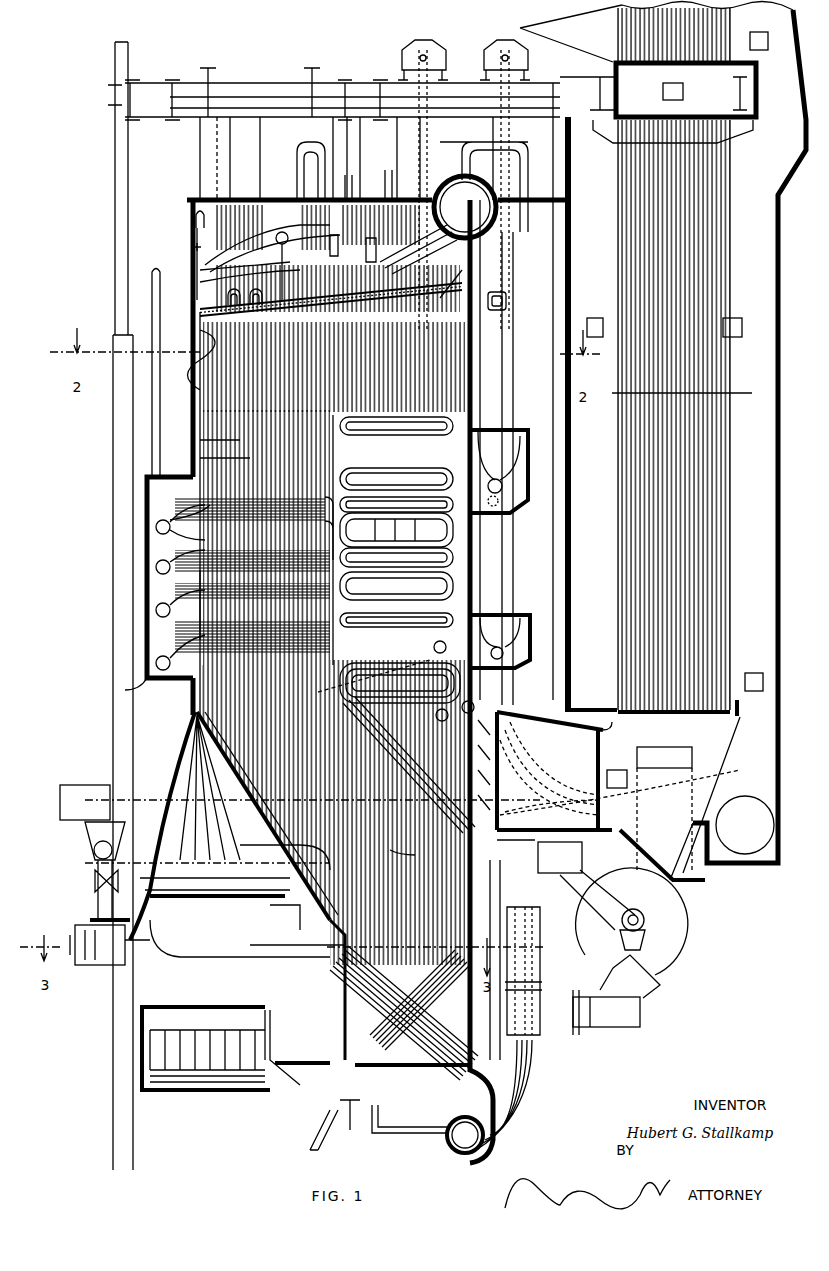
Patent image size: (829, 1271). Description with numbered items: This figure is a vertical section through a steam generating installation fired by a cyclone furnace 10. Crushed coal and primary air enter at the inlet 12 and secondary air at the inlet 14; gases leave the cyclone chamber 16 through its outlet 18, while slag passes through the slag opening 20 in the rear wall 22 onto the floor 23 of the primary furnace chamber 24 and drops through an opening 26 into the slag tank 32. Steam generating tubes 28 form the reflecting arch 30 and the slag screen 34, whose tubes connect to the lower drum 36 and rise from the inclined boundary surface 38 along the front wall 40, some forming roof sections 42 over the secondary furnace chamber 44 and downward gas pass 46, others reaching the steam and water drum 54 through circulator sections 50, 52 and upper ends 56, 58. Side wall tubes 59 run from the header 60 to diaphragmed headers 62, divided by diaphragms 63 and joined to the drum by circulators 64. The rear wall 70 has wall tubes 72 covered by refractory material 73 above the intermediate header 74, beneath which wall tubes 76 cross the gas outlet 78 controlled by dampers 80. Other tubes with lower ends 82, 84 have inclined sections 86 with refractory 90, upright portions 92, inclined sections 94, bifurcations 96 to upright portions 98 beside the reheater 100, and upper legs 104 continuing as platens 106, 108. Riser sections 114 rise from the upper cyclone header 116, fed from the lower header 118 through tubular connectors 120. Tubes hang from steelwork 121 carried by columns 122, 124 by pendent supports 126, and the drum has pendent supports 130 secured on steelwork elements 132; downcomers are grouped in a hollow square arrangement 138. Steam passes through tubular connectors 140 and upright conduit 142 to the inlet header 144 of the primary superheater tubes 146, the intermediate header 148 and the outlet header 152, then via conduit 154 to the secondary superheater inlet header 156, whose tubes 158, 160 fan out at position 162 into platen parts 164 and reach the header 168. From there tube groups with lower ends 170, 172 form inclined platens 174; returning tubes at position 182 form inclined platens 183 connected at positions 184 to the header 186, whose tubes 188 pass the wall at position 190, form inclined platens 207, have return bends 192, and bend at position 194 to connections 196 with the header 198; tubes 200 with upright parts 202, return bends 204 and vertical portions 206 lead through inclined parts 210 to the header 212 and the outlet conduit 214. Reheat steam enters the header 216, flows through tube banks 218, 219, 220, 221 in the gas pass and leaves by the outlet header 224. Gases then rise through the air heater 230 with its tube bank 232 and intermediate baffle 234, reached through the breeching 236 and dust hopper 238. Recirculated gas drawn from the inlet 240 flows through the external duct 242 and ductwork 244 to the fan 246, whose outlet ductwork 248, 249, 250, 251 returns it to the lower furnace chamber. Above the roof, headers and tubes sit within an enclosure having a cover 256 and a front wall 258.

The cyclone furnace 10 is at (97, 910).
The inlet 12 is at (95, 968).
The inlet 14 is at (190, 915).
The cyclone furnace chamber 16 is at (198, 966).
The outlet 18 is at (258, 966).
The slag opening 20 is at (262, 1000).
The rear wall 22 is at (289, 917).
The floor 23 is at (310, 1062).
The primary furnace chamber 24 is at (300, 991).
The opening 26 is at (320, 1110).
The steam generating tubes 28 is at (305, 895).
The reflecting arch 30 is at (297, 946).
The slag pit or tank 32 is at (300, 1145).
The slag screen 34 is at (355, 1015).
The lower drum 36 is at (465, 1155).
The inclined boundary surface 38 is at (225, 765).
The front wall 40 is at (193, 380).
The roof sections 42 is at (283, 313).
The secondary furnace chamber 44 is at (280, 682).
The downward gas pass 46 is at (334, 308).
The circulator section 50 is at (392, 196).
The circulator section 52 is at (344, 245).
The steam and water separating drum 54 is at (465, 207).
The upper end 56 is at (444, 294).
The upper end 58 is at (420, 286).
The steam generating tubes 59 is at (290, 830).
The header 60 is at (270, 1115).
The header 62 is at (197, 255).
The diaphragm 63 is at (197, 282).
The circulators 64 is at (378, 248).
The rear wall 70 is at (478, 880).
The wall tubes 72 is at (470, 596).
The refractory material 73 is at (488, 860).
The intermediate transverse header 74 is at (476, 702).
The wall tubes 76 is at (466, 765).
The gas outlet 78 is at (554, 771).
The dampers 80 is at (530, 785).
The lower end 82 is at (450, 1130).
The lower end 84 is at (458, 1140).
The inclined sections 86 is at (430, 1020).
The refractory material 90 is at (425, 989).
The upright portions 92 is at (488, 850).
The inclined sections 94 is at (440, 810).
The bifurcations 96 is at (355, 672).
The upright portions 98 is at (333, 652).
The reheater 100 is at (498, 556).
The upper legs 104 is at (396, 765).
The platens 106 is at (362, 770).
The platens 108 is at (414, 852).
The riser sections 114 is at (215, 770).
The upper cyclone header 116 is at (215, 882).
The lower header 118 is at (150, 1025).
The tubular connectors 120 is at (150, 1060).
The steelwork 121 is at (312, 88).
The column 122 is at (115, 135).
The column 124 is at (566, 268).
The pendent support 126 is at (196, 235).
The pendent supports 130 is at (432, 145).
The steelwork elements 132 is at (425, 62).
The hollow square arrangement 138 is at (505, 292).
The tubular connectors 140 is at (462, 152).
The upright conduit 142 is at (515, 560).
The inlet header 144 is at (436, 722).
The return bend tubes 146 is at (357, 684).
The intermediate header 148 is at (434, 652).
The outlet header 152 is at (515, 500).
The conduit 154 is at (325, 175).
The inlet header 156 is at (282, 232).
The tubes 158 is at (352, 185).
The tubes 160 is at (200, 270).
The position 162 is at (320, 505).
The superheater platen parts 164 is at (325, 530).
The header 168 is at (158, 662).
The lower ends 170 is at (125, 690).
The lower ends 172 is at (160, 657).
The platen 174 is at (230, 610).
The position 182 is at (300, 574).
The horizontally inclined platens 183 is at (262, 597).
The positions of connection 184 is at (160, 614).
The intermediate secondary superheater header 186 is at (158, 607).
The groups of tubes 188 is at (158, 604).
The position 190 is at (200, 578).
The return bends 192 is at (262, 300).
The position 194 is at (245, 525).
The points of connection 196 is at (158, 566).
The header 198 is at (158, 562).
The tubes 200 is at (156, 527).
The upright parts 202 is at (223, 455).
The return bends 204 is at (200, 282).
The vertical portions 206 is at (218, 439).
The horizontally inclined platens 207 is at (230, 532).
The horizontally inclined parts 210 is at (160, 520).
The header 212 is at (158, 520).
The conduit 214 is at (145, 460).
The inlet header 216 is at (505, 654).
The tube bank 218 is at (383, 612).
The tube bank 219 is at (378, 572).
The tube bank 220 is at (380, 500).
The tube bank 221 is at (393, 435).
The outlet header 224 is at (505, 490).
The air heater 230 is at (722, 521).
The bank of tubes 232 is at (705, 272).
The intermediate baffle 234 is at (745, 398).
The breeching 236 is at (585, 708).
The dust hopper 238 is at (695, 875).
The recirculated gas inlet 240 is at (665, 752).
The external duct 242 is at (637, 811).
The ductwork 244 is at (621, 880).
The fan 246 is at (690, 933).
The ductwork 248 is at (662, 988).
The ductwork 249 is at (625, 1018).
The ductwork 250 is at (535, 953).
The ductwork 251 is at (492, 905).
The superposed cover 256 is at (212, 205).
The front wall 258 is at (200, 262).